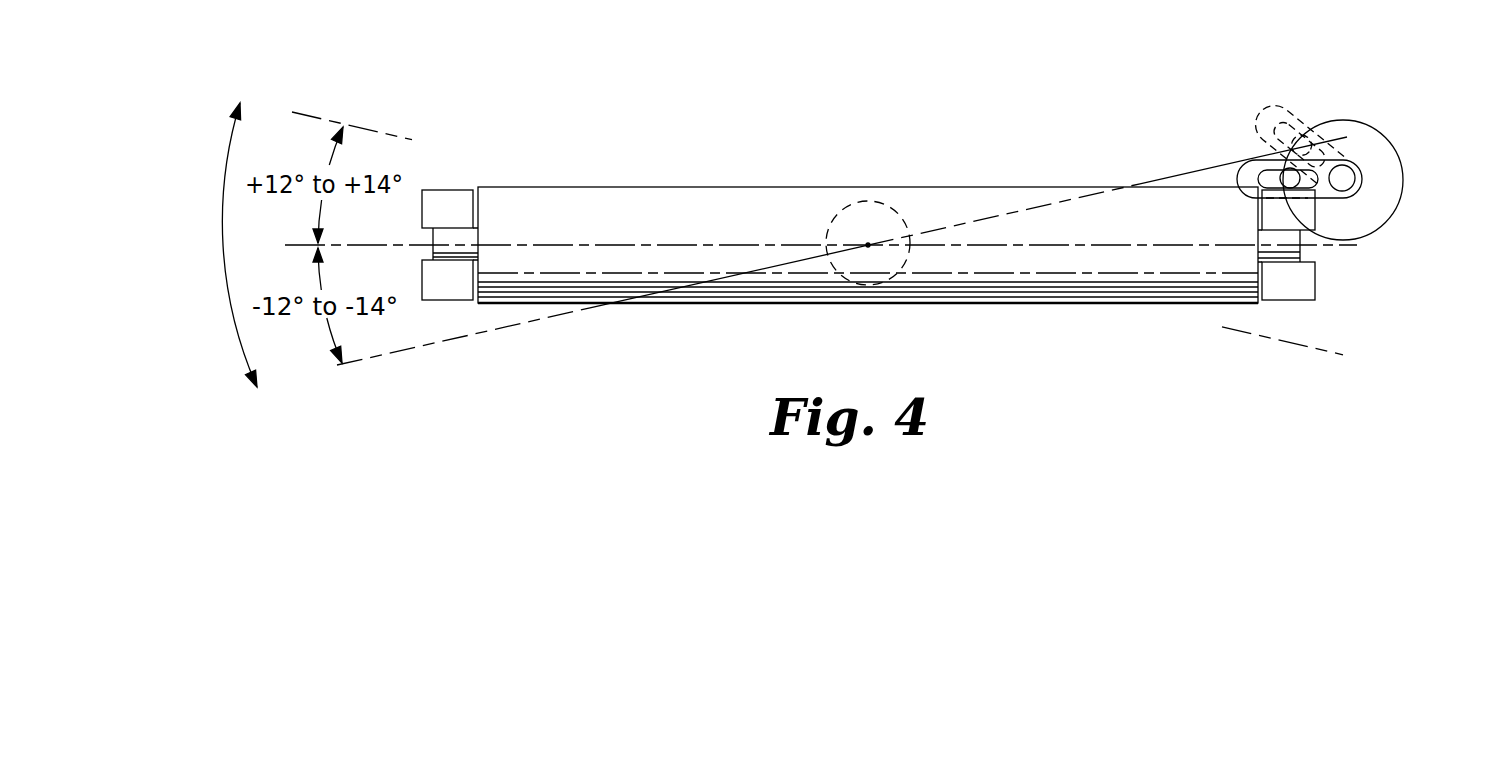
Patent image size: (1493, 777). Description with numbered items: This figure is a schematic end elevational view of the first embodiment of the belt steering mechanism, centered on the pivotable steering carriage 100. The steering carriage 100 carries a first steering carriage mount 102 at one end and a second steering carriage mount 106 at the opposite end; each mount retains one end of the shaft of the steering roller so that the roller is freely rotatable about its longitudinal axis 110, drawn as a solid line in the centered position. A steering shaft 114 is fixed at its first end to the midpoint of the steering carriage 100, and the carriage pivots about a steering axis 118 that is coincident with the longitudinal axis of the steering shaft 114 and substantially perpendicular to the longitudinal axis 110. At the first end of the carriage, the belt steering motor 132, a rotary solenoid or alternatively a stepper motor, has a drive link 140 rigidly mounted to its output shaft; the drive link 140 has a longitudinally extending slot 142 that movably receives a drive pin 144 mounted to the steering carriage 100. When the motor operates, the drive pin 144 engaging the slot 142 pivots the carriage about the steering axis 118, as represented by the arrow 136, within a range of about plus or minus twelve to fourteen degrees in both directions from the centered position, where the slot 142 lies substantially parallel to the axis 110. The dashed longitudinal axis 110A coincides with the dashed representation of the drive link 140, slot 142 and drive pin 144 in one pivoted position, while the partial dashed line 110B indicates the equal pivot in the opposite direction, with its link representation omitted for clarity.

The steering carriage 100 is at (442, 187).
The first steering carriage mount 102 is at (1315, 287).
The second steering carriage mount 106 is at (440, 290).
The longitudinal axis 110 is at (1343, 248).
The dashed longitudinal axis 110A is at (550, 318).
The partial dashed line 110B is at (1248, 335).
The steering shaft 114 is at (843, 207).
The steering axis 118 is at (868, 245).
The belt steering motor 132 is at (1392, 200).
The arrow 136 is at (223, 215).
The drive link 140 is at (1272, 105).
The longitudinally extending slot 142 is at (1253, 168).
The drive pin 144 is at (1283, 175).